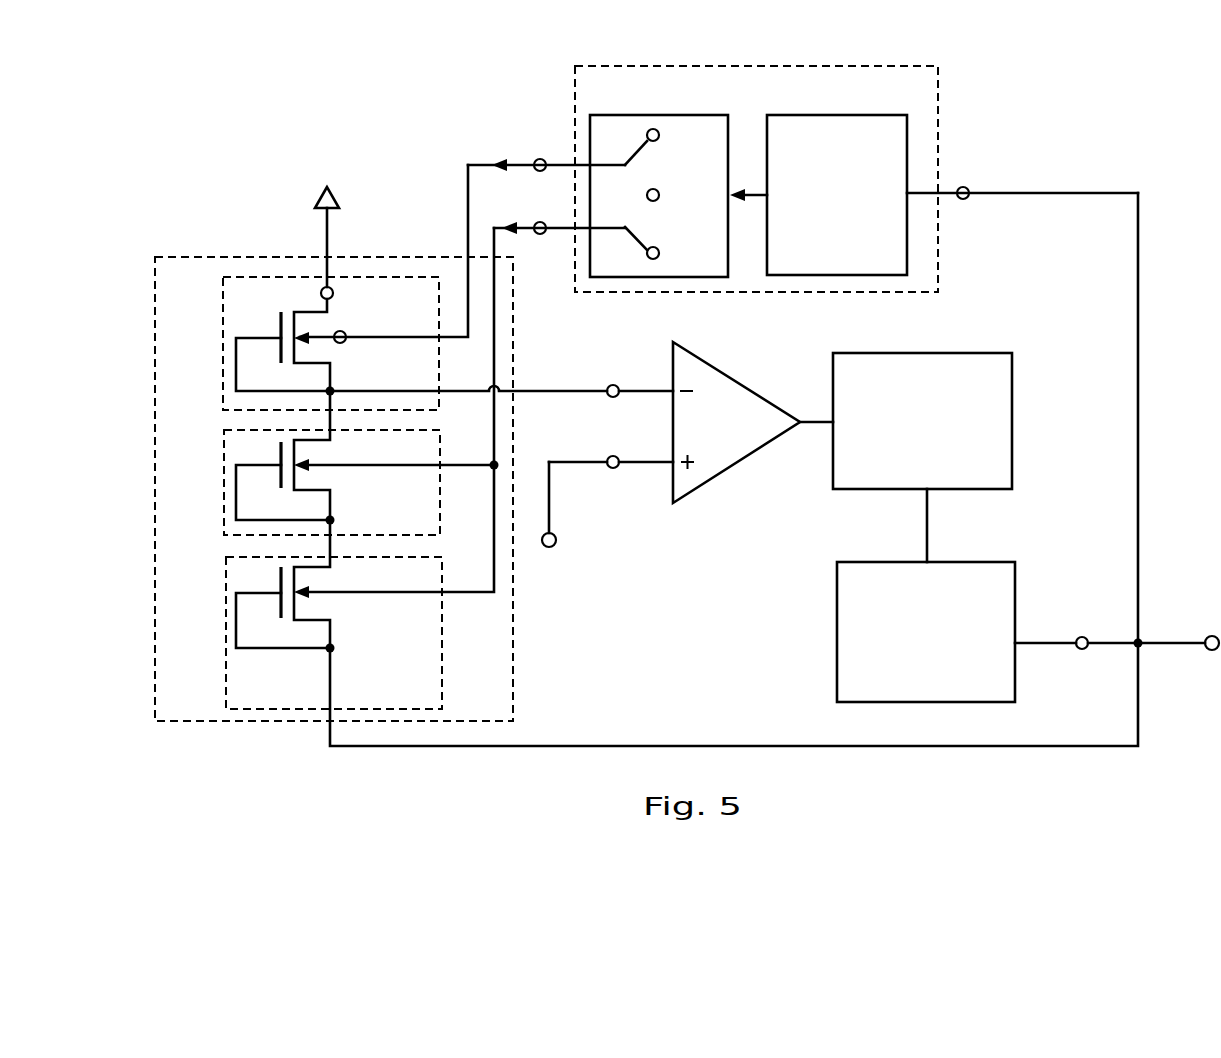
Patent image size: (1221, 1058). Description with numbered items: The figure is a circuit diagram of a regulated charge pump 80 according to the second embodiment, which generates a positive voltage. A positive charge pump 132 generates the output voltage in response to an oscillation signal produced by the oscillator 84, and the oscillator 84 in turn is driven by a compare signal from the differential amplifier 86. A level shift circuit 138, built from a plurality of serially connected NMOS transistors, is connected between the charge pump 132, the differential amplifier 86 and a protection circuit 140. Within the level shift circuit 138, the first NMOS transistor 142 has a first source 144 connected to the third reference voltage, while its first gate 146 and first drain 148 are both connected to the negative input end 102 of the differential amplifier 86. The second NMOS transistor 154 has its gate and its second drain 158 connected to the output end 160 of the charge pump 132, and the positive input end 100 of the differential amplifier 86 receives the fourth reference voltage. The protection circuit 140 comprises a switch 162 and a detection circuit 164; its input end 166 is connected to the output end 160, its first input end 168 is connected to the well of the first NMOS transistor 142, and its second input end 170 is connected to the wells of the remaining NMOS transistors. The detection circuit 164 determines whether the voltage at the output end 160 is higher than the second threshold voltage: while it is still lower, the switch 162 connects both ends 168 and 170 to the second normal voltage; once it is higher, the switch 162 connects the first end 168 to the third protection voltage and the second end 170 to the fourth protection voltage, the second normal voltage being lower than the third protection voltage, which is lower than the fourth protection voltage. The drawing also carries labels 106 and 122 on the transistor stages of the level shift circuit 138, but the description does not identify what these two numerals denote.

The regulated charge pump 80 is at (230, 127).
The oscillator 84 is at (968, 353).
The differential amplifier 86 is at (722, 372).
The positive input end 100 is at (613, 469).
The negative input end 102 is at (613, 383).
The transistor 106 is at (279, 600).
The gate control node 122 is at (355, 321).
The positive charge pump 132 is at (968, 562).
The level shift circuit 138 is at (245, 257).
The protection circuit 140 is at (938, 145).
The first NMOS transistor 142 is at (223, 337).
The first source 144 is at (334, 293).
The first gate 146 is at (276, 330).
The first drain 148 is at (336, 389).
The second NMOS transistor 154 is at (228, 612).
The second drain 158 is at (338, 646).
The output end 160 is at (1082, 636).
The switch 162 is at (680, 114).
The detection circuit 164 is at (855, 114).
The input end 166 is at (963, 200).
The first input end 168 is at (541, 158).
The first input end 170 is at (540, 235).